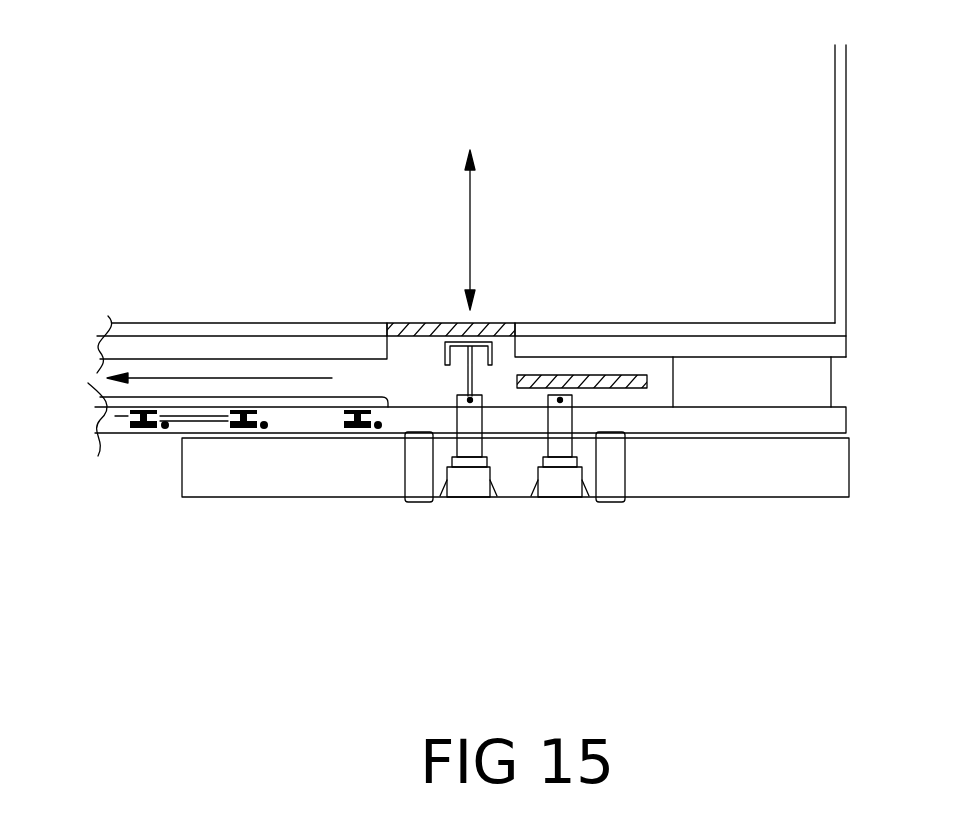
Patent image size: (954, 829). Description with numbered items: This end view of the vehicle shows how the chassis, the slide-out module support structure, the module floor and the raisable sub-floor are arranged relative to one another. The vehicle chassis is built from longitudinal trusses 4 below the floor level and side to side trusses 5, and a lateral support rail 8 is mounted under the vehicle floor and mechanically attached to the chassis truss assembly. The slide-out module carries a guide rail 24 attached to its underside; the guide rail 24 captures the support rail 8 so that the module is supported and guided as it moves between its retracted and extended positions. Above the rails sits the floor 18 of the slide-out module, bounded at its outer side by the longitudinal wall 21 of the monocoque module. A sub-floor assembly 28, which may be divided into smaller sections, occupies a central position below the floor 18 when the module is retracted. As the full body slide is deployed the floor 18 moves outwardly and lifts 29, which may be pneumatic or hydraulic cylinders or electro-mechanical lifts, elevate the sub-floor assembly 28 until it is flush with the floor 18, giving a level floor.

The longitudinal truss 4 is at (413, 478).
The side to side truss 5 is at (808, 476).
The lateral support rail 8 is at (832, 420).
The floor 18 is at (183, 318).
The longitudinal wall 21 is at (839, 200).
The guide rail 24 is at (207, 418).
The sub-floor assembly 28 is at (408, 320).
The electro-mechanical lift 29 is at (470, 420).